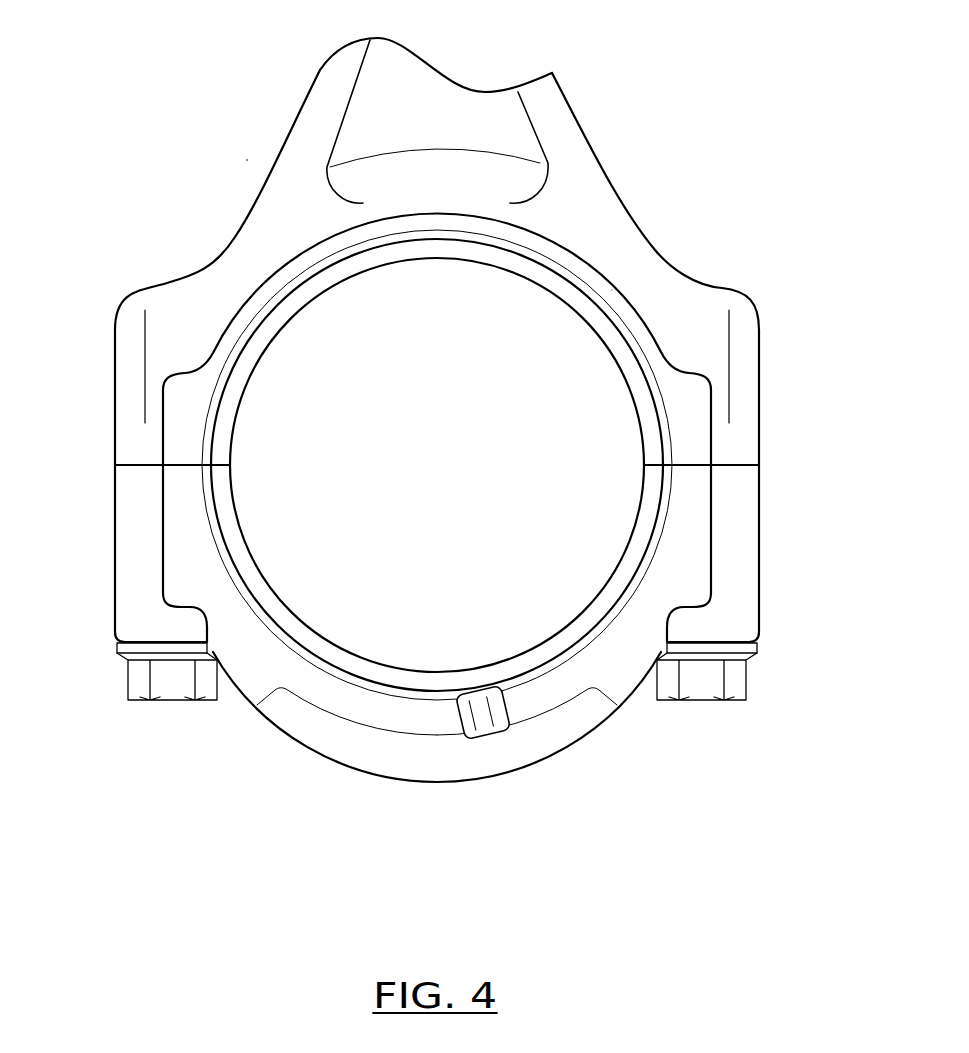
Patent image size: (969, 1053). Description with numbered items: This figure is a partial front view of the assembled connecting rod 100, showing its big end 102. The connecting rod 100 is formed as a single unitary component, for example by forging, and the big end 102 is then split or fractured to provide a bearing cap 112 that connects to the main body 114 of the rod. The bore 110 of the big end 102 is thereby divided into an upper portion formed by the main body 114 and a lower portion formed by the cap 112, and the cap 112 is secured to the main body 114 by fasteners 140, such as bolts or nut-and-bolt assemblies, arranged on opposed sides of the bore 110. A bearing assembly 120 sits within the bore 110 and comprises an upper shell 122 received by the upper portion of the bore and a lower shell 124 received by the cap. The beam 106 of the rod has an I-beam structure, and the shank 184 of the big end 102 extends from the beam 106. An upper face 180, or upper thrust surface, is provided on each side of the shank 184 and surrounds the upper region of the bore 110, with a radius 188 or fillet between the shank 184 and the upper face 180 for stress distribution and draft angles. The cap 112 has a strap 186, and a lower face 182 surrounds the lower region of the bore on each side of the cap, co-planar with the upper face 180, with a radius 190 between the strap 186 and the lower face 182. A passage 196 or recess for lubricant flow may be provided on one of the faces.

The connecting rod 100 is at (427, 321).
The big end 102 is at (471, 431).
The beam 106 is at (721, 290).
The bore 110 is at (640, 355).
The bearing cap 112 is at (735, 582).
The main body 114 is at (563, 152).
The bearing assembly 120 is at (437, 465).
The upper shell 122 is at (243, 398).
The lower shell 124 is at (312, 647).
The fasteners 140 is at (433, 701).
The upper face 180 is at (578, 270).
The lower face 182 is at (550, 692).
The shank 184 is at (303, 152).
The strap 186 is at (337, 740).
The radius 188 is at (619, 288).
The radius 190 is at (437, 768).
The passage 196 is at (483, 717).